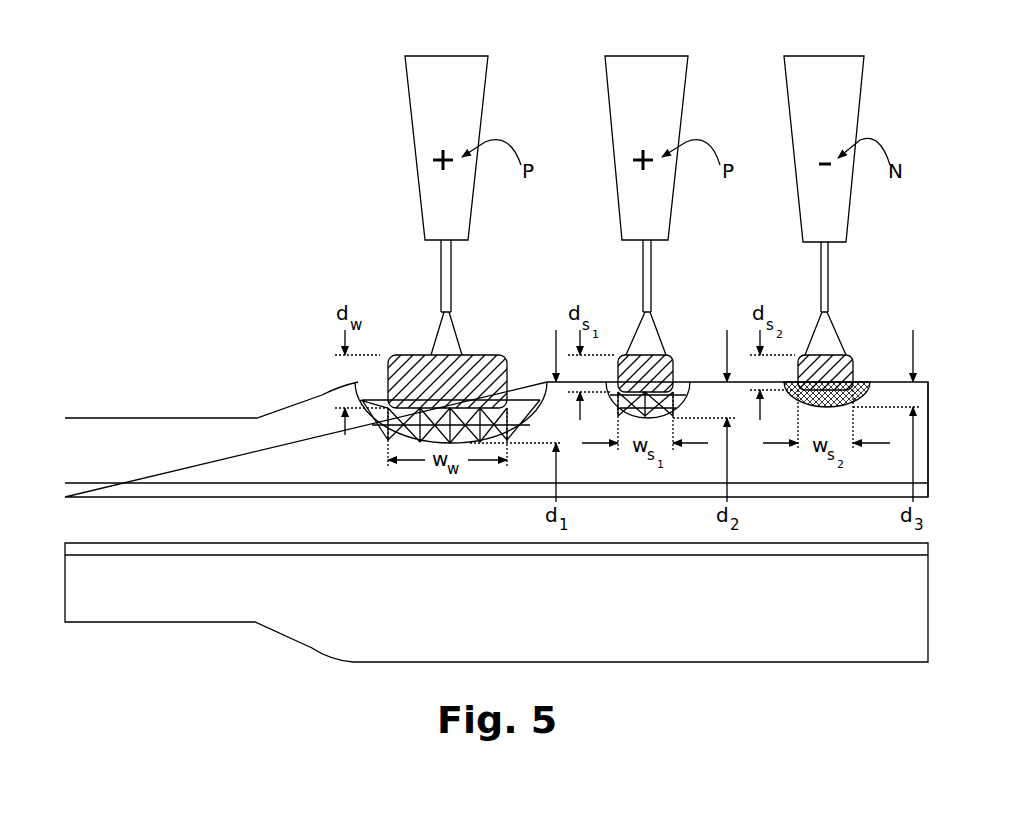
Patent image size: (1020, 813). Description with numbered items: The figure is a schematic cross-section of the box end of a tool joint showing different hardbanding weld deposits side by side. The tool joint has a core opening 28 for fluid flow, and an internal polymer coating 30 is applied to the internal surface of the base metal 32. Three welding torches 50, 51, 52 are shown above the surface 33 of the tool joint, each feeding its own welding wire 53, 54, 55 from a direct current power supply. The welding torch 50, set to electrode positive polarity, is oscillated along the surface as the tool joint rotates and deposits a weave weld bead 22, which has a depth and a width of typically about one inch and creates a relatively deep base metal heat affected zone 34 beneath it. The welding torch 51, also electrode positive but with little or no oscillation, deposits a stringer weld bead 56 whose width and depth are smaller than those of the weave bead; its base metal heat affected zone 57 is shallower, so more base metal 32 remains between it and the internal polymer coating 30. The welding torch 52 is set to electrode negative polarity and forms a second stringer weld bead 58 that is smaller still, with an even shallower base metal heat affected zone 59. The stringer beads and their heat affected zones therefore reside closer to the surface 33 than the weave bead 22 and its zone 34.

The weave weld bead 22 is at (482, 376).
The core opening 28 is at (118, 520).
The internal polymer coating 30 is at (70, 491).
The base metal 32 is at (77, 450).
The surface of the tool joint 33 is at (928, 383).
The base metal heat affected zone 34 is at (372, 382).
The welding torch 50 is at (455, 56).
The welding torch 51 is at (648, 56).
The welding torch 52 is at (815, 56).
The welding wire 53 is at (441, 273).
The welding wire 54 is at (643, 268).
The welding wire 55 is at (821, 270).
The stringer weld bead 56 is at (660, 366).
The base metal heat affected zone 57 is at (675, 392).
The second stringer weld bead 58 is at (856, 368).
The base metal heat affected zone 59 is at (866, 390).